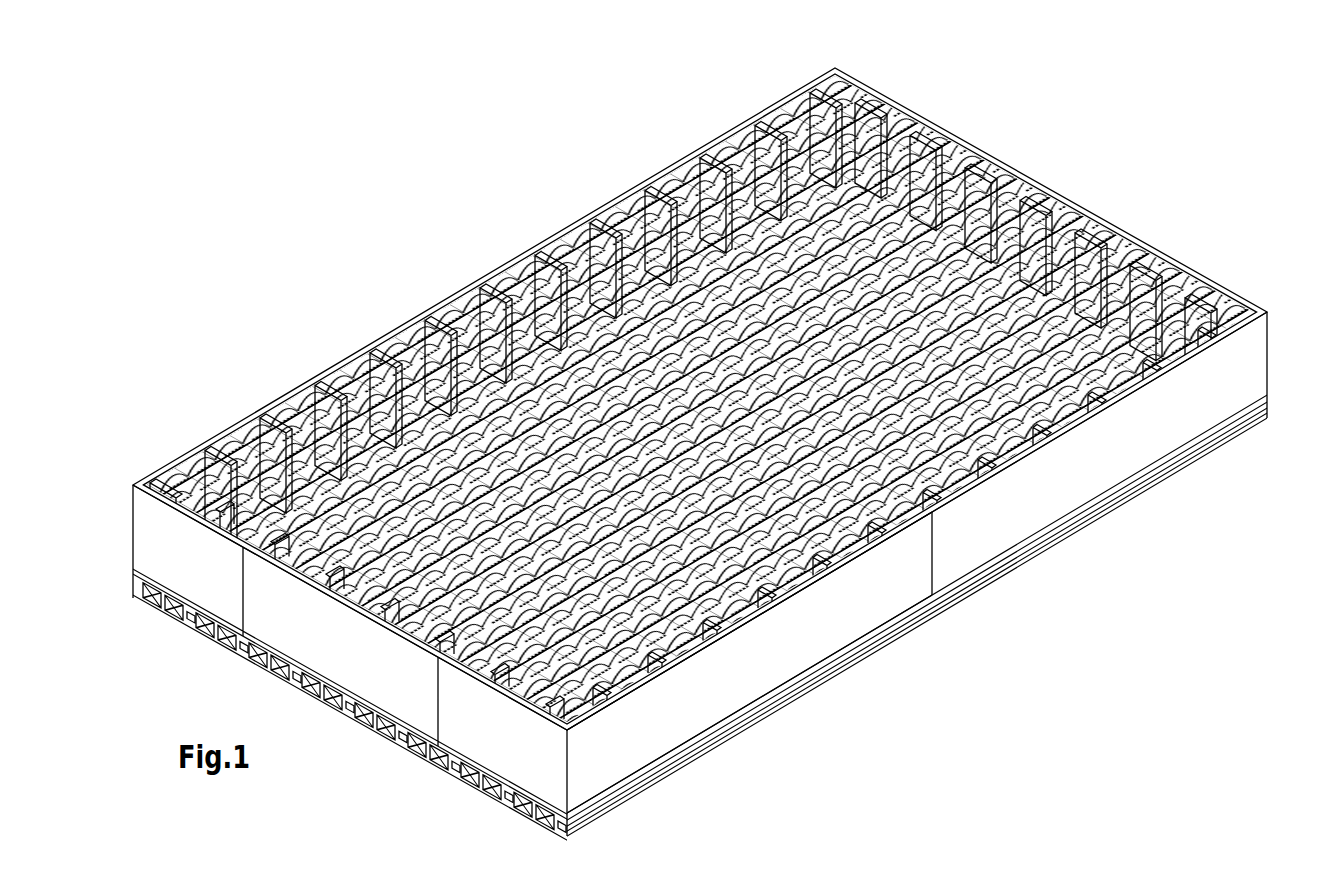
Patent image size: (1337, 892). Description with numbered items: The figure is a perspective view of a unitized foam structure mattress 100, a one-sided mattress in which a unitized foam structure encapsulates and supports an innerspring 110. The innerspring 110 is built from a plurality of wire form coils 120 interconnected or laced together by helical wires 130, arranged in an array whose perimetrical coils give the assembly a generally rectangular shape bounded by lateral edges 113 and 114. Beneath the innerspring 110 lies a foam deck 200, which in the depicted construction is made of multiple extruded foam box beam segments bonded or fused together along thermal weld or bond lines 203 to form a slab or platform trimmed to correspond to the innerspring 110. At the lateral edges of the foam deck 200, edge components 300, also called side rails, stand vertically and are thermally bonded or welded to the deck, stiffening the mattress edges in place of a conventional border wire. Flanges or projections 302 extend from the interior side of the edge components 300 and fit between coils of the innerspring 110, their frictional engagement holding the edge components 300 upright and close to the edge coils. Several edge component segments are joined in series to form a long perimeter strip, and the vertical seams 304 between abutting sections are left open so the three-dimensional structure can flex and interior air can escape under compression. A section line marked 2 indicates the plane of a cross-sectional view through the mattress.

The unitized foam structure mattress 100 is at (593, 126).
The innerspring 110 is at (356, 364).
The lateral edge 113 is at (1063, 225).
The lateral edge 114 is at (495, 275).
The wire form coils 120 is at (452, 642).
The helical wires 130 is at (625, 655).
The foam deck 200 is at (897, 627).
The thermal weld or bond lines 203 is at (797, 585).
The edge components 300 is at (1082, 472).
The flanges or projections 302 is at (980, 187).
The vertical seams 304 is at (932, 533).
The section line 2- 2 is at (365, 612).